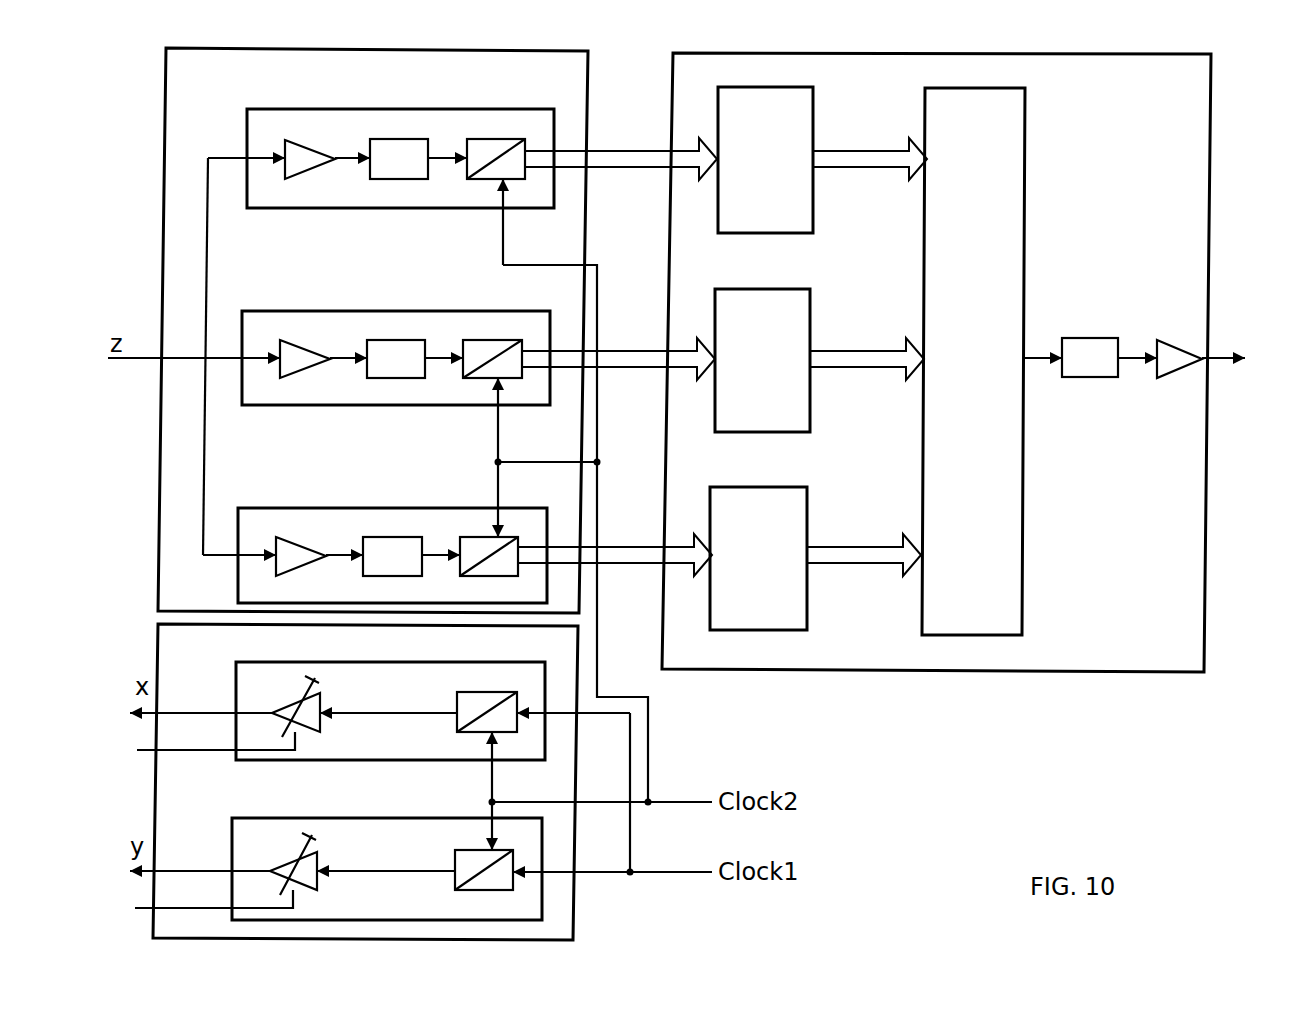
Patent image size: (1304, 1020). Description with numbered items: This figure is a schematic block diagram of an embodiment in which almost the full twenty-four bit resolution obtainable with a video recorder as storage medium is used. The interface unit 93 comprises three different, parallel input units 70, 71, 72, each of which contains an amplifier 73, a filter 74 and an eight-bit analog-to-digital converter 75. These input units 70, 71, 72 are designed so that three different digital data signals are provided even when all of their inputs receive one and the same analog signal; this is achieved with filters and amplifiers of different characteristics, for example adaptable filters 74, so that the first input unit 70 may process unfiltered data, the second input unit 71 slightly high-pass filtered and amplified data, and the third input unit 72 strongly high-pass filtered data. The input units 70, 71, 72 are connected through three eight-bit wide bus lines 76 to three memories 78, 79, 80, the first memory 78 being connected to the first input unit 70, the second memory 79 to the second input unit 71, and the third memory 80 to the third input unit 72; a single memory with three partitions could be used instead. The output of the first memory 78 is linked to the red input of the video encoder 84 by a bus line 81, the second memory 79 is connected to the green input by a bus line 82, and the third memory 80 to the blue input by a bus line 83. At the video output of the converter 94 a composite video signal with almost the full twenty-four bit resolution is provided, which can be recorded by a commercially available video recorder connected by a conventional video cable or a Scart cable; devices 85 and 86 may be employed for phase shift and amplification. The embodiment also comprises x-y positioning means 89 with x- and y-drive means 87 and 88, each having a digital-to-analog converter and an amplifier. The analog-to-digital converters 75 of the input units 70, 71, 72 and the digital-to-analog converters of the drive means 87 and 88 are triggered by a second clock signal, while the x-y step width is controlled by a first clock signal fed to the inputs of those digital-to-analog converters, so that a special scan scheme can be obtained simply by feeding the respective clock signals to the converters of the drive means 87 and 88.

The first input unit 70 is at (525, 118).
The second input unit 71 is at (520, 320).
The third input unit 72 is at (550, 520).
The amplifier 73 is at (308, 168).
The filter 74 is at (387, 168).
The analog-to-digital converter 75 is at (492, 175).
The bus lines 76 is at (610, 168).
The first memory 78 is at (808, 108).
The second memory 79 is at (790, 302).
The third memory 80 is at (787, 497).
The bus line 81 is at (873, 168).
The bus line 82 is at (870, 368).
The bus line 83 is at (867, 557).
The video encoder 84 is at (1017, 153).
The phase shift device 85 is at (1085, 360).
The amplification device 86 is at (1170, 360).
The x-drive means 87 is at (538, 687).
The y-drive means 88 is at (430, 830).
The x-y positioning means 89 is at (563, 909).
The interface unit 93 is at (590, 117).
The converter 94 is at (1098, 640).